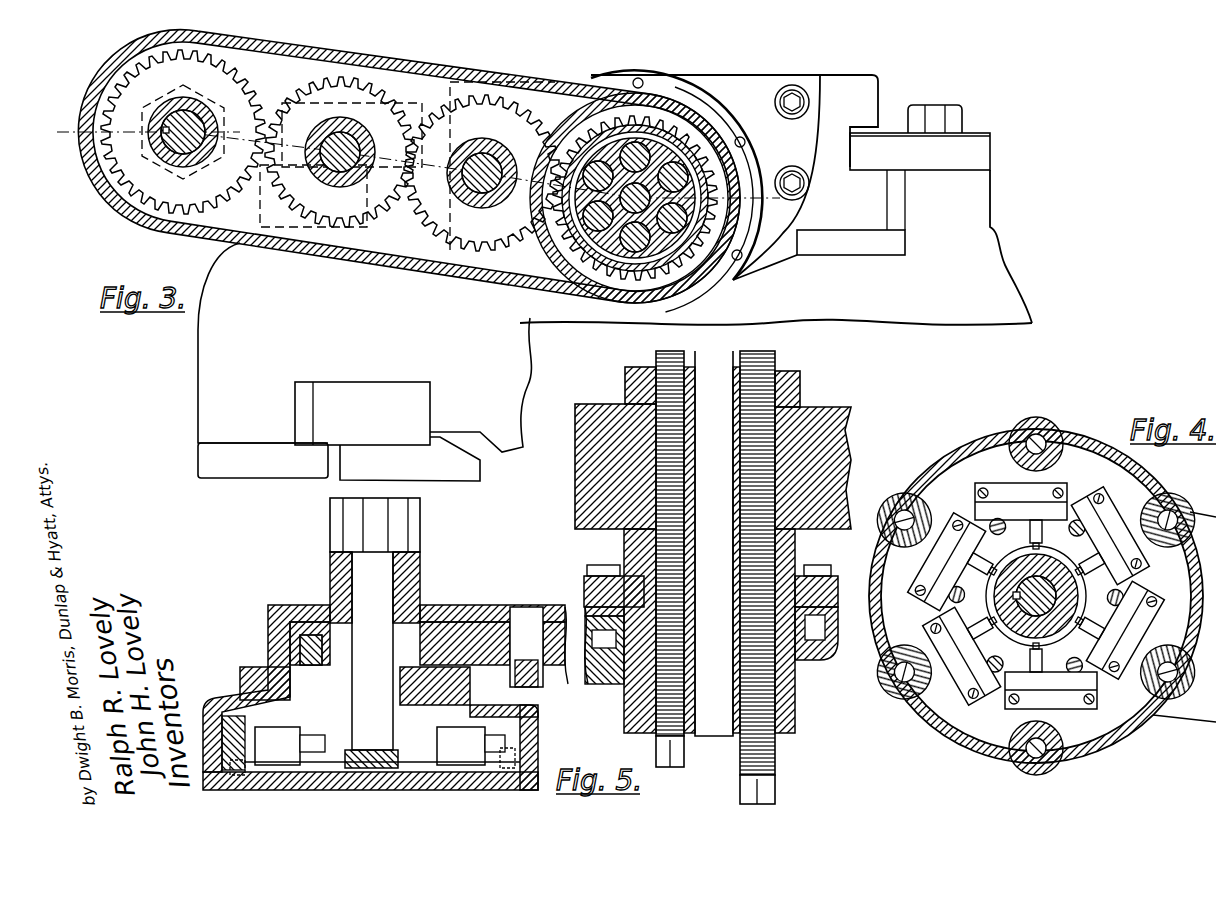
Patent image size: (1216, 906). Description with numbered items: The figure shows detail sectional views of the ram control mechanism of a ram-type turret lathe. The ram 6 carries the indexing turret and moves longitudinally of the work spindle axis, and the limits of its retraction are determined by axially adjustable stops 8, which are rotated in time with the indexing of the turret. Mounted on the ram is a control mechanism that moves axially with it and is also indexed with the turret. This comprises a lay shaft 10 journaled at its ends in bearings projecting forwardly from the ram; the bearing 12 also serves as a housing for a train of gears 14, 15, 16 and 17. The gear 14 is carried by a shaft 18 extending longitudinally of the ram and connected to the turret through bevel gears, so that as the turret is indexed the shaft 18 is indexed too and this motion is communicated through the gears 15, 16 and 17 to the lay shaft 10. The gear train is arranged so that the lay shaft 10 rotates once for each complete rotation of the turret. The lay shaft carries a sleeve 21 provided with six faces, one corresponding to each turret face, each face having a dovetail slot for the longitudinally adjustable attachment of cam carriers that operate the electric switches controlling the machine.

In FIG. 3, the ram 6 is at (842, 87).
In FIG. 3, the axially adjustable stops 8 is at (678, 210).
In FIG. 5, the axially adjustable stops 8 is at (651, 444).
In FIG. 3, the lay shaft 10 is at (165, 155).
In FIG. 5, the lay shaft 10 is at (380, 598).
In FIG. 4, the lay shaft 10 is at (1042, 587).
In FIG. 5, the bearing 12 is at (273, 612).
In FIG. 4, the bearing 12 is at (1042, 432).
In FIG. 3, the gear 14 is at (665, 117).
In FIG. 5, the gear 14 is at (629, 605).
In FIG. 3, the gear 15 is at (502, 93).
In FIG. 5, the gear 15 is at (596, 631).
In FIG. 3, the gear 16 is at (353, 78).
In FIG. 5, the gear 16 is at (482, 609).
In FIG. 3, the gear 17 is at (245, 72).
In FIG. 5, the gear 17 is at (312, 632).
In FIG. 3, the shaft 18 is at (663, 243).
In FIG. 5, the shaft 18 is at (713, 460).
In FIG. 5, the sleeve 21 is at (397, 530).